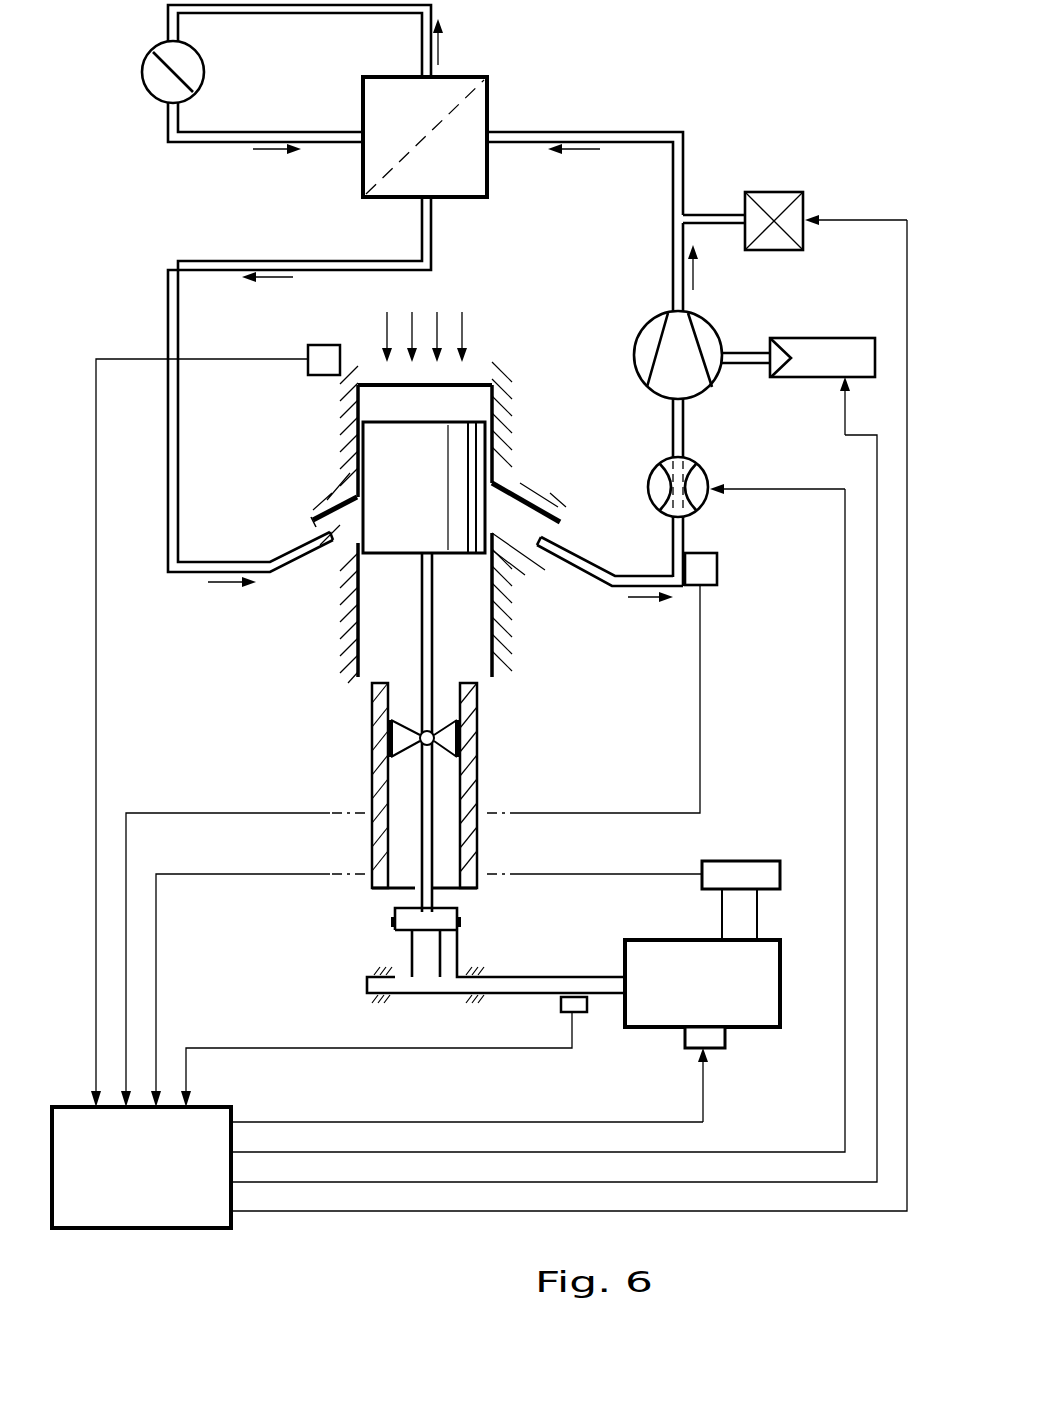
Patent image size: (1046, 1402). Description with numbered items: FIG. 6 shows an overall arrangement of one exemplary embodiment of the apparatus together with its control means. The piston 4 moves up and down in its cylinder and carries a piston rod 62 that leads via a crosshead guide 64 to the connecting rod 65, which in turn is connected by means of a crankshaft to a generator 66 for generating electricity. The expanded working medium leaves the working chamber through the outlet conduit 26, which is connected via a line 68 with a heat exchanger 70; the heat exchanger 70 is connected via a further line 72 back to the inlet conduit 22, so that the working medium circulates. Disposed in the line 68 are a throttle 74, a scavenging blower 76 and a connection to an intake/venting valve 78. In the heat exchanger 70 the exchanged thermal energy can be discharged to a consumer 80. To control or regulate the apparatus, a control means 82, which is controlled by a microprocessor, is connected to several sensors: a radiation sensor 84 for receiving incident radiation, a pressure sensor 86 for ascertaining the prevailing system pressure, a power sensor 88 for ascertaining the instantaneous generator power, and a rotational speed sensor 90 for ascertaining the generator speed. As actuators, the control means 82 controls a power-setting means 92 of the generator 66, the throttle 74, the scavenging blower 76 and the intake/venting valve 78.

The piston 4 is at (463, 450).
The inlet conduit 22 is at (315, 528).
The outlet conduit 26 is at (548, 528).
The piston rod 62 is at (432, 628).
The crosshead guide 64 is at (369, 731).
The connecting rod 65 is at (425, 858).
The generator 66 is at (662, 952).
The line 68 is at (643, 135).
The heat exchanger 70 is at (480, 108).
The further line 72 is at (178, 424).
The throttle 74 is at (652, 483).
The scavenging blower 76 is at (641, 351).
The intake/venting valve 78 is at (776, 198).
The consumer 80 is at (143, 76).
The control means 82 is at (128, 1212).
The radiation sensor 84 is at (322, 345).
The pressure sensor 86 is at (720, 568).
The power sensor 88 is at (745, 870).
The rotational speed sensor 90 is at (585, 1005).
The power-setting means 92 is at (728, 1036).